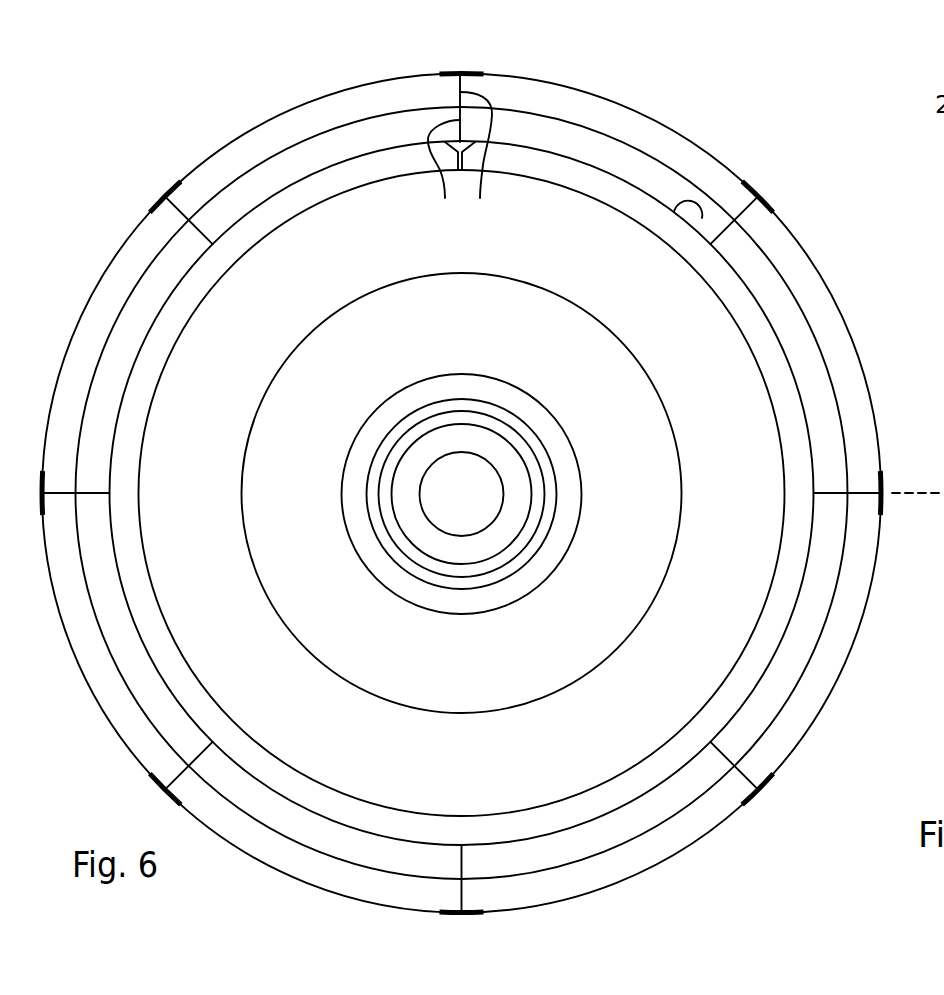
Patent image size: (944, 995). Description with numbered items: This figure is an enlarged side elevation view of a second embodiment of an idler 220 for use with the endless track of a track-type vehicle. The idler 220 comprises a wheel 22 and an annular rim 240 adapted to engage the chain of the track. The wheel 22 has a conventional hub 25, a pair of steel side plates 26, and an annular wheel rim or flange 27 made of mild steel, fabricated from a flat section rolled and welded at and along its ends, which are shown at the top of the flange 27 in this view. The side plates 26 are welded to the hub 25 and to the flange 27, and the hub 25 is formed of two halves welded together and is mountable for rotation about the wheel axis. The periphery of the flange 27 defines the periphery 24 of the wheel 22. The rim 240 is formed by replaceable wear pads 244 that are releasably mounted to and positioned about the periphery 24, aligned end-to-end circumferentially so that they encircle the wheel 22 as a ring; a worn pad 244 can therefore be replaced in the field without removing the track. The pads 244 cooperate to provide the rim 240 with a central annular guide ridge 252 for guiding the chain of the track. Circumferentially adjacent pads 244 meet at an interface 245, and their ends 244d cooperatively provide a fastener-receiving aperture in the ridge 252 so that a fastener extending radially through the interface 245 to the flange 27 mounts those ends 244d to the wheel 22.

The wheel 22 is at (718, 607).
The periphery of the wheel 24 is at (690, 224).
The hub 25 is at (505, 530).
The side plates 26 is at (392, 766).
The flange 27 is at (640, 212).
The idler 220 is at (828, 213).
The rim 240 is at (743, 145).
The wear pads 244 is at (237, 155).
The ends of the pads 244d is at (461, 162).
The interface 245 is at (460, 75).
The guide ridge 252 is at (840, 352).